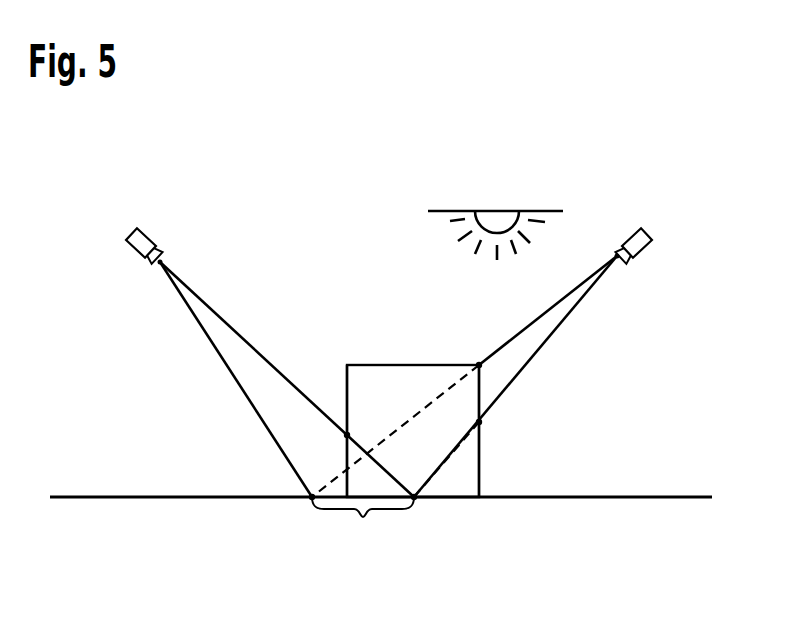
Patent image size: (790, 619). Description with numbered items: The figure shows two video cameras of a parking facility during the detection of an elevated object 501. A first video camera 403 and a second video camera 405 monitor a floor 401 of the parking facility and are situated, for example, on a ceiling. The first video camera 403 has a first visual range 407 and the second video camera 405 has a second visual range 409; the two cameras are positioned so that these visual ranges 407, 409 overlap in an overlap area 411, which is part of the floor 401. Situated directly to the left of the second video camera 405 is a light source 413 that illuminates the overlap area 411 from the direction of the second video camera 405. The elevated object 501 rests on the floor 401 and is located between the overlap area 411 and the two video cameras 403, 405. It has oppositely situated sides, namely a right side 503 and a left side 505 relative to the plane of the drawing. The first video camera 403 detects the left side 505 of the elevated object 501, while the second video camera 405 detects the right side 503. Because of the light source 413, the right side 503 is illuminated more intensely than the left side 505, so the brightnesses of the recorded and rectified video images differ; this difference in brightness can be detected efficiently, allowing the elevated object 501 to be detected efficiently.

The floor 401 is at (619, 497).
The first video camera 403 is at (135, 231).
The second video camera 405 is at (650, 228).
The first visual range 407 is at (268, 405).
The second visual range 409 is at (532, 344).
The overlap area 411 is at (363, 525).
The light source 413 is at (497, 210).
The elevated object 501 is at (376, 365).
The right side 503 is at (480, 447).
The left side 505 is at (336, 387).